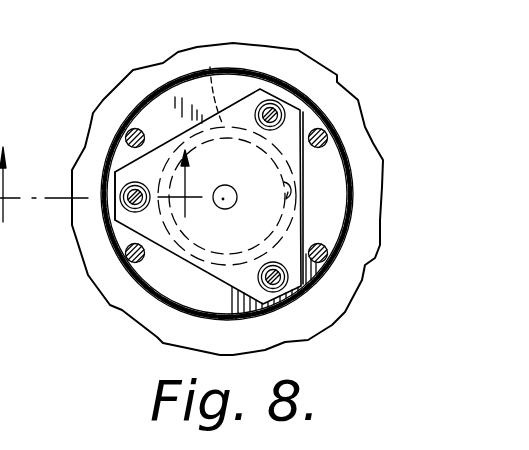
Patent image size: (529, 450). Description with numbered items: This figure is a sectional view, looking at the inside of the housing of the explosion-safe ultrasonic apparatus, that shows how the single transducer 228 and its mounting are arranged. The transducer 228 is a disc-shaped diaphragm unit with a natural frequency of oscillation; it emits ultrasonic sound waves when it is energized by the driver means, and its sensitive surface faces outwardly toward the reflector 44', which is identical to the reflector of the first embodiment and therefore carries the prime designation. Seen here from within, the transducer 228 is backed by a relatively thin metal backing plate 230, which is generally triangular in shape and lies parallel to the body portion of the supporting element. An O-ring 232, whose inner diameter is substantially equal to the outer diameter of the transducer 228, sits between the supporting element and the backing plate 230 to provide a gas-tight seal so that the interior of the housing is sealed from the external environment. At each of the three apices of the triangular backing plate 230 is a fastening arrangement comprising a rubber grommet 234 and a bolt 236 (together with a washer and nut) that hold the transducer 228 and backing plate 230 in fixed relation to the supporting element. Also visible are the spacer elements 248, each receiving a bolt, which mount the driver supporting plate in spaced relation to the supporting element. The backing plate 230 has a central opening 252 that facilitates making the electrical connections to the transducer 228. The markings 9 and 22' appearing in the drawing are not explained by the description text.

The section arrow 9 is at (183, 189).
The housing ring 22' is at (227, 163).
The reflector 44' is at (262, 199).
The transducer means 228 is at (227, 196).
The backing plate 230 is at (165, 247).
The O-ring 232 is at (210, 67).
The rubber grommet 234 is at (284, 121).
The bolt 236 is at (285, 108).
The spacer element 248 is at (321, 244).
The central opening 252 is at (243, 172).